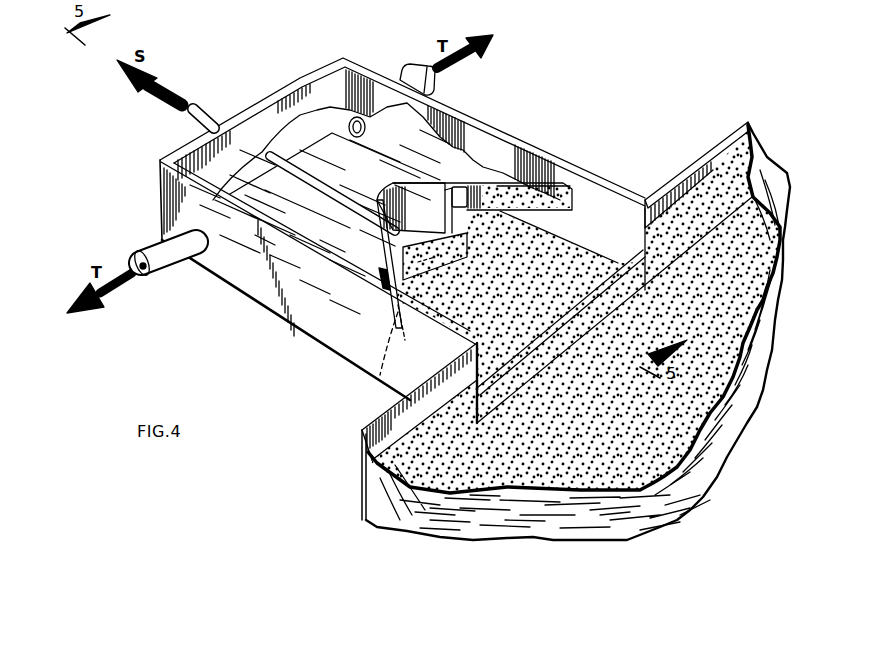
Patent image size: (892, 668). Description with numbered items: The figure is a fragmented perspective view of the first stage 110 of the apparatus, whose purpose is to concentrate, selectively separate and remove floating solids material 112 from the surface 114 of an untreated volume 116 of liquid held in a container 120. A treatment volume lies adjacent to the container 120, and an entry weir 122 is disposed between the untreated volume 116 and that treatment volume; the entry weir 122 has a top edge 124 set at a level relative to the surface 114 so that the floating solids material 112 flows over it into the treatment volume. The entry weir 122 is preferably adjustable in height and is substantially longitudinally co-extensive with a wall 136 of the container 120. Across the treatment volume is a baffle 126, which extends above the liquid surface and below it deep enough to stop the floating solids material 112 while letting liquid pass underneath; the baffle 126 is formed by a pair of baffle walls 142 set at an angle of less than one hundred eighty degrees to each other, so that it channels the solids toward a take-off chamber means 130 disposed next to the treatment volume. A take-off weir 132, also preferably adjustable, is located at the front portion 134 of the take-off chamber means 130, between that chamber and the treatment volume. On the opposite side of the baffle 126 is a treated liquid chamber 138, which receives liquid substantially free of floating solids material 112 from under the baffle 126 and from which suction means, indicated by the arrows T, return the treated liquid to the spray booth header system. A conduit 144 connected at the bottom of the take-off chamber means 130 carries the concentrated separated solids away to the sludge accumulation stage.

The first stage 110 is at (622, 133).
The floating solids material 112 is at (555, 345).
The surface 114 is at (366, 484).
The untreated volume 116 is at (524, 519).
The container 120 is at (717, 142).
The entry weir 122 is at (642, 203).
The top edge 124 is at (603, 280).
The baffle 126 is at (510, 192).
The take-off chamber means 130 is at (420, 197).
The take-off weir 132 is at (482, 190).
The front portion 134 is at (380, 250).
The wall 136 is at (378, 418).
The treated liquid chamber 138 is at (448, 97).
The baffle walls 142 is at (380, 372).
The conduit 144 is at (200, 112).